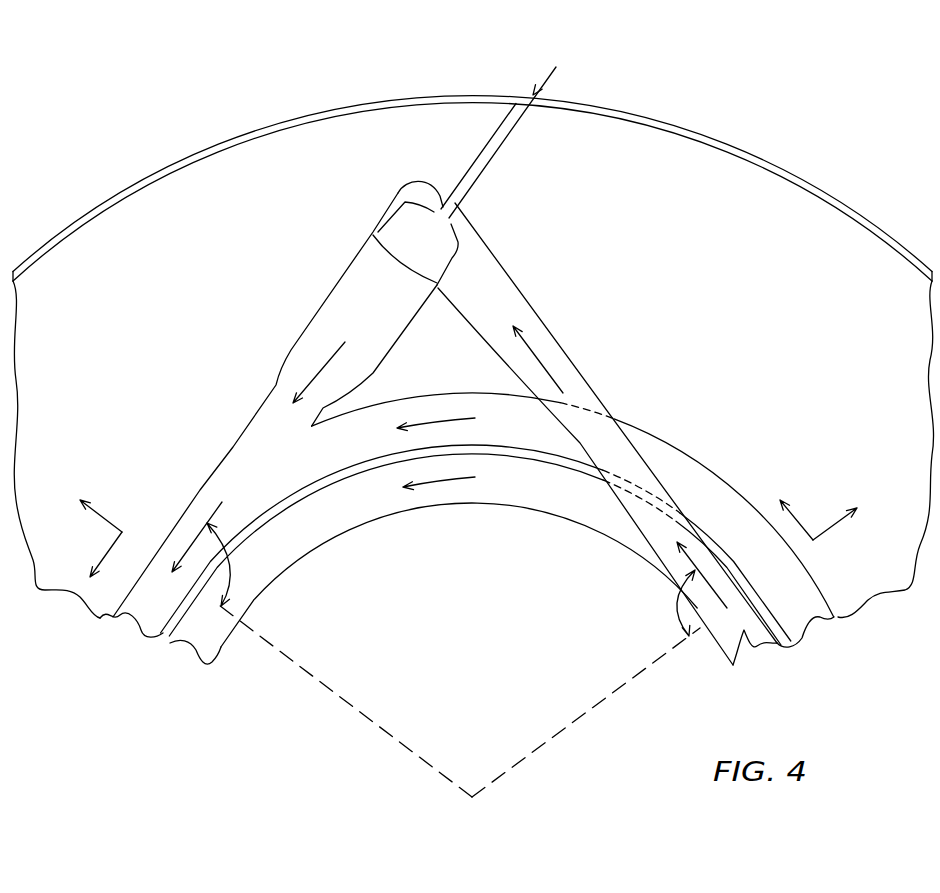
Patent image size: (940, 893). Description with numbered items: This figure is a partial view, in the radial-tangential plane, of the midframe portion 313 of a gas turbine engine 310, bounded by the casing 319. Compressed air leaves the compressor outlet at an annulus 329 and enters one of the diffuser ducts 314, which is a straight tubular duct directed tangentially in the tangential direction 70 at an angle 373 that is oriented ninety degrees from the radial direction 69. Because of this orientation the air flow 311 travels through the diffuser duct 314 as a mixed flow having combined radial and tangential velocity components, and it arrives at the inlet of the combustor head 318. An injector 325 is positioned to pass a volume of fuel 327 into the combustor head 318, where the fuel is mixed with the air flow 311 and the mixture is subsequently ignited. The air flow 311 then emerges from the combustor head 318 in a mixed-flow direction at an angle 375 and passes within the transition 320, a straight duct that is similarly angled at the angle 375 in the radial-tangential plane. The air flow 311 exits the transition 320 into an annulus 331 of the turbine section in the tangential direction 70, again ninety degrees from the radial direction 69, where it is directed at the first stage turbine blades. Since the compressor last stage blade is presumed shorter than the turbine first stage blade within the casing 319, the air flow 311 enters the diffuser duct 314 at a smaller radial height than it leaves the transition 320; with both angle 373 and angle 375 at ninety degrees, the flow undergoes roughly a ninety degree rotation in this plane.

The gas turbine engine 310 is at (753, 120).
The midframe portion 313 is at (803, 147).
The casing 319 is at (818, 189).
The volume of fuel 327 is at (547, 78).
The injector 325 is at (488, 162).
The combustor head 318 is at (389, 220).
The transition 320 is at (290, 350).
The diffuser duct 314 is at (588, 380).
The air flow 311 is at (197, 538).
The radial direction 69 is at (105, 517).
The tangential direction 70 is at (110, 548).
The angle 375 is at (233, 580).
The angle 373 is at (678, 605).
The annulus 331 is at (147, 615).
The annulus 329 is at (748, 643).